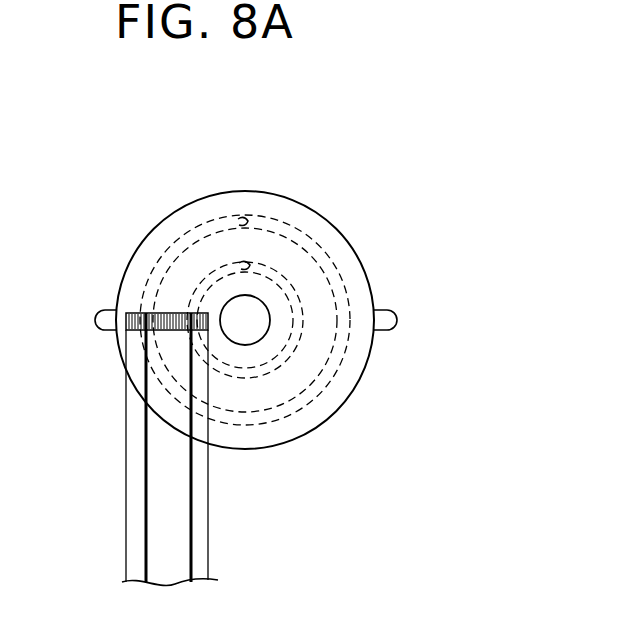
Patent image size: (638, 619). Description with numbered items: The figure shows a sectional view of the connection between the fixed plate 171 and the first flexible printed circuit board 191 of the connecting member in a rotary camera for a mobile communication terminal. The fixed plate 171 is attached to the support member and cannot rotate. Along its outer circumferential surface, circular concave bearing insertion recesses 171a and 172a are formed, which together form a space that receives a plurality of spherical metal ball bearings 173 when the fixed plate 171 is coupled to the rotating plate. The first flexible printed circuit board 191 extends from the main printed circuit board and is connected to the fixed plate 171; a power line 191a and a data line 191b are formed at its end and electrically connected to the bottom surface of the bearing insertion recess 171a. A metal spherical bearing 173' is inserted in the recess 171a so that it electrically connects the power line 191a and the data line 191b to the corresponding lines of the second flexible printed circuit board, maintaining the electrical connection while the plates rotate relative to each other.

The fixed plate 171 is at (335, 245).
The bearing insertion recess 171a is at (342, 347).
The bearing insertion recess 172a is at (285, 362).
The bearing 173 is at (278, 209).
The bearing 173' is at (218, 187).
The first flexible printed circuit board 191 is at (200, 550).
The power line 191a is at (146, 315).
The data line 191b is at (189, 316).